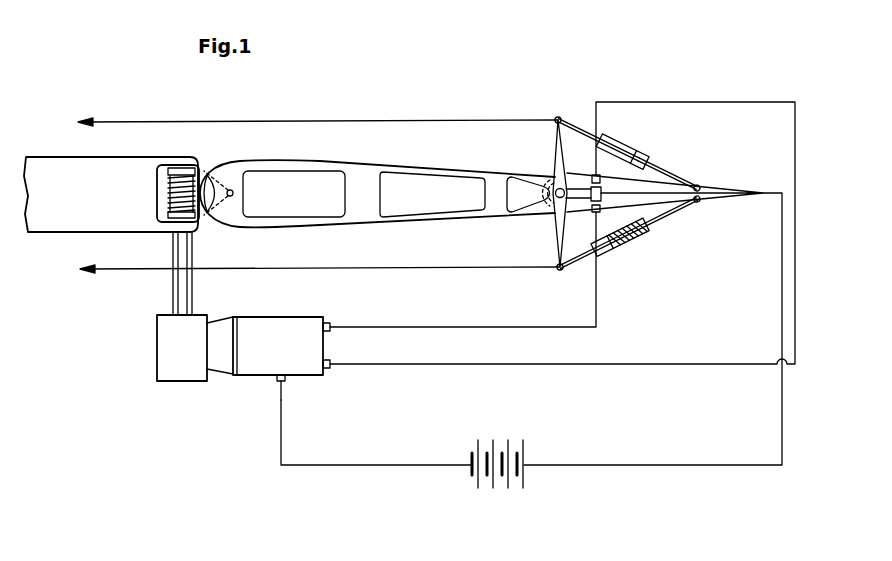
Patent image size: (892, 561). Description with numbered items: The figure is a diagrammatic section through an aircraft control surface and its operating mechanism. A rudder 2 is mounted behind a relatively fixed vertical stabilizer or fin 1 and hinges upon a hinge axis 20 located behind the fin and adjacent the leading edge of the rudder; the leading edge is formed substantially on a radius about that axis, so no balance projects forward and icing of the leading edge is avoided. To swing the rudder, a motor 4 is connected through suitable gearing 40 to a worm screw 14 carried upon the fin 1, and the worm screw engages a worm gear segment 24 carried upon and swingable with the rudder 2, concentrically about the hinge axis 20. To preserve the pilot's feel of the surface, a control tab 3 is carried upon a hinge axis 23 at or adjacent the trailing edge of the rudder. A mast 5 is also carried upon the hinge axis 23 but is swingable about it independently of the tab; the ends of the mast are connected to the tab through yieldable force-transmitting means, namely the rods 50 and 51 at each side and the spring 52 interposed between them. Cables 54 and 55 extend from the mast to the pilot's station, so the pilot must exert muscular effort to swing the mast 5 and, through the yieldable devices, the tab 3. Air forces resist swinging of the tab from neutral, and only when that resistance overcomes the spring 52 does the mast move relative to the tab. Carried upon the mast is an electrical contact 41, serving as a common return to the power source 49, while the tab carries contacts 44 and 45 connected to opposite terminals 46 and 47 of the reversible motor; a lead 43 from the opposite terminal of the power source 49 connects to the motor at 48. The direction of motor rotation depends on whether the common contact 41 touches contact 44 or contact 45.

The fin 1 is at (118, 167).
The rudder 2 is at (372, 177).
The control tab 3 is at (716, 188).
The motor 4 is at (253, 360).
The mast 5 is at (557, 142).
The worm screw 14 is at (166, 188).
The hinge axis 20 is at (232, 189).
The hinge axis 23 is at (556, 199).
The worm gear segment 24 is at (203, 173).
The gearing 40 is at (170, 350).
The electrical contact 41 is at (602, 192).
The lead 43 is at (348, 466).
The contact 44 is at (597, 176).
The contact 45 is at (587, 257).
The terminal 46 is at (330, 369).
The terminal 47 is at (328, 323).
The motor connection 48 is at (277, 383).
The power source 49 is at (478, 482).
The rod 50 is at (575, 127).
The rod 51 is at (660, 163).
The spring 52 is at (626, 247).
The cable 54 is at (392, 120).
The cable 55 is at (388, 269).